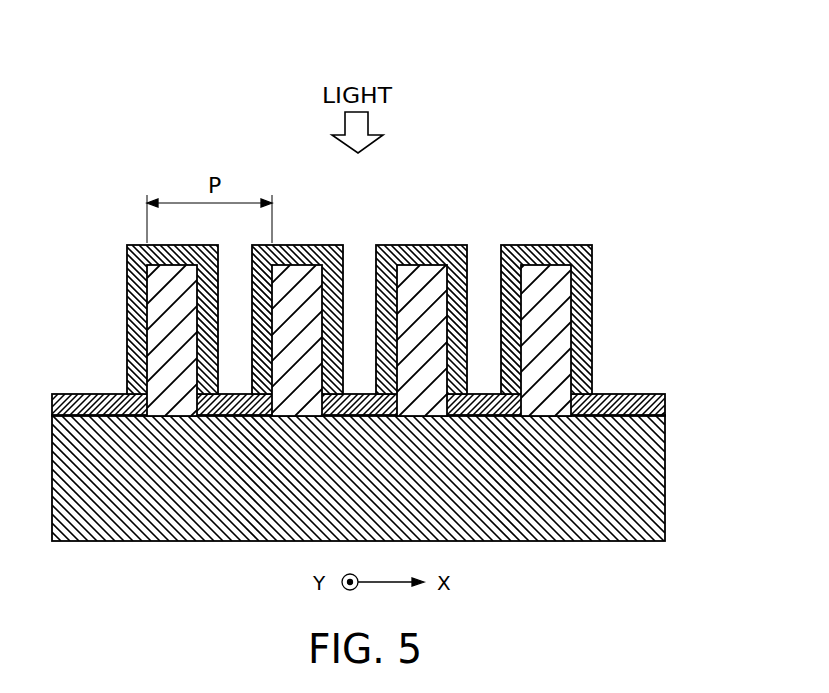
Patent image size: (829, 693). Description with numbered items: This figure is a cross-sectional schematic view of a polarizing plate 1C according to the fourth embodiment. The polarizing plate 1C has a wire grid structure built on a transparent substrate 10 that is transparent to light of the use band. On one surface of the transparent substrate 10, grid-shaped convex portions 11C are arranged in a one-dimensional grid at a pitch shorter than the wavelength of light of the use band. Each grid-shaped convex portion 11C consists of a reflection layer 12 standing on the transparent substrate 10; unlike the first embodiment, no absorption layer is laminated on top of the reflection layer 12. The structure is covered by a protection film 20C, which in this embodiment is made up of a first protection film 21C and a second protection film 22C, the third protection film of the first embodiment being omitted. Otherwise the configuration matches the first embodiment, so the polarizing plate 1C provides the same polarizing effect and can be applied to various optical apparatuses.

The polarizing plate 1C is at (412, 308).
The transparent substrate 10 is at (648, 465).
The grid-shaped convex portion 11C is at (412, 258).
The reflection layer 12 is at (127, 326).
The protection film 20C is at (412, 330).
The first protection film 21C is at (593, 288).
The second protection film 22C is at (620, 394).